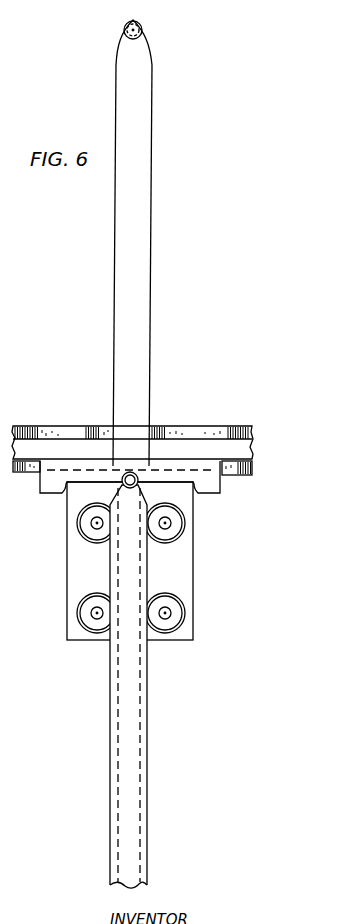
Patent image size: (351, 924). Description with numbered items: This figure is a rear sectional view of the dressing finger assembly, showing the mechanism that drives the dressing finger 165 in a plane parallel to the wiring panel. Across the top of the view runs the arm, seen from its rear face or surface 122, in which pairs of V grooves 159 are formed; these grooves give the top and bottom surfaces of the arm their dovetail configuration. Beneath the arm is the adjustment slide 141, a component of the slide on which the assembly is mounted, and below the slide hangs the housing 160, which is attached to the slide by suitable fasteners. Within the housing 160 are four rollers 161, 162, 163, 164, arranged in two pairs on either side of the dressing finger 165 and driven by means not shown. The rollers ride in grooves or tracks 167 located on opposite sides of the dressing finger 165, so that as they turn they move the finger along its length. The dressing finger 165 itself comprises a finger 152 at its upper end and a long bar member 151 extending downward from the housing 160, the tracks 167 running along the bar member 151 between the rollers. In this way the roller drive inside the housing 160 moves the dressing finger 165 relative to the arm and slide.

The rear face or surface 122 is at (222, 450).
The V grooves 159 is at (68, 430).
The adjustment slide 141 is at (40, 473).
The finger 152 is at (137, 473).
The housing 160 is at (78, 560).
The roller 161 is at (183, 614).
The roller 162 is at (85, 615).
The roller 163 is at (85, 522).
The roller 164 is at (180, 521).
The bar member 151 is at (147, 775).
The dressing finger 165 is at (128, 713).
The grooves or tracks 167 is at (117, 755).